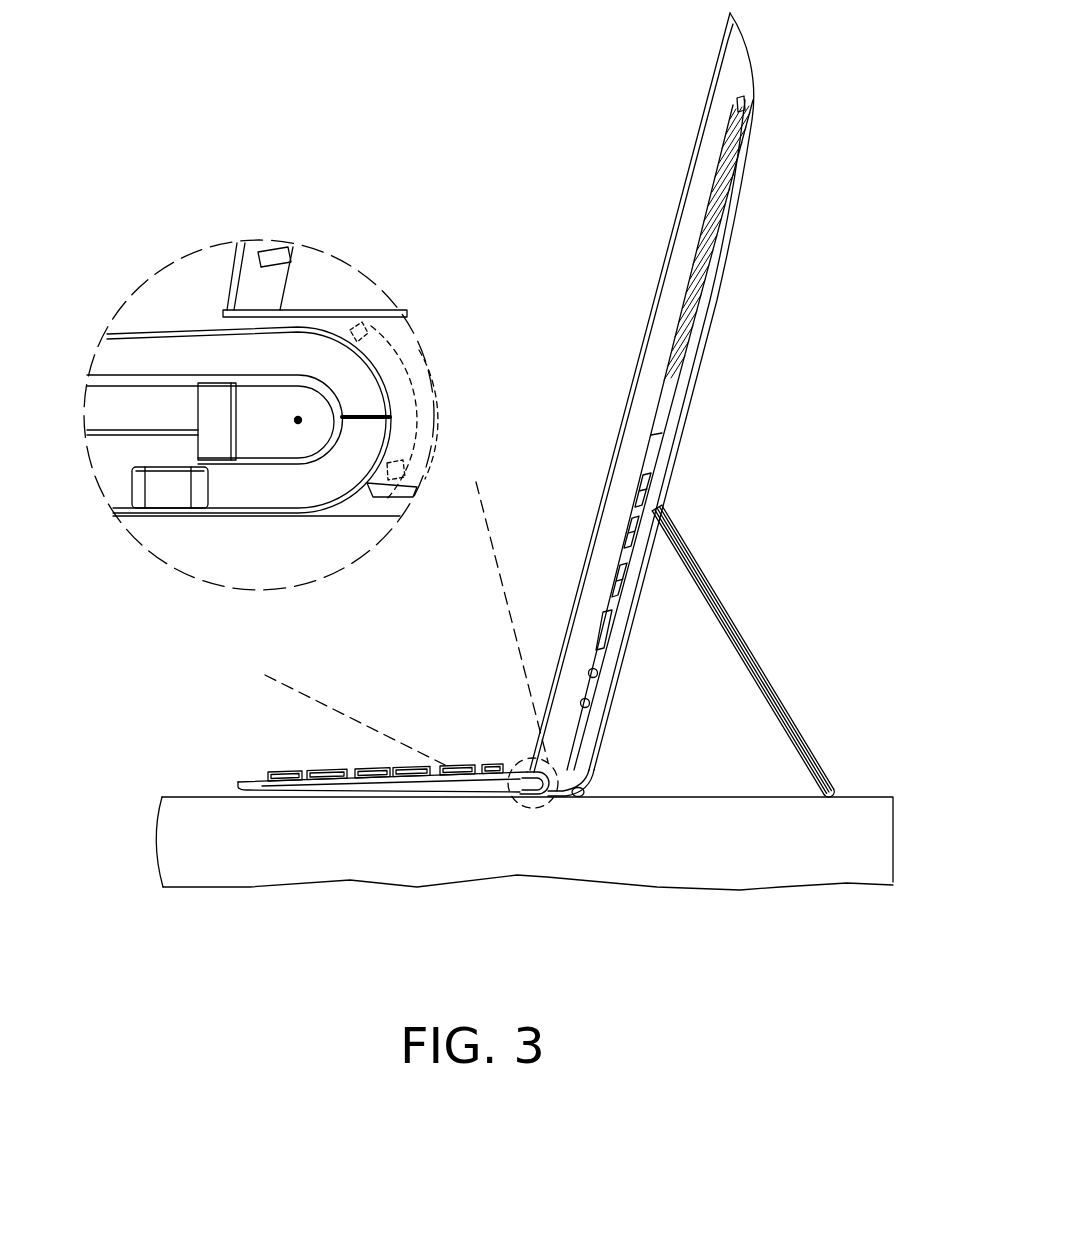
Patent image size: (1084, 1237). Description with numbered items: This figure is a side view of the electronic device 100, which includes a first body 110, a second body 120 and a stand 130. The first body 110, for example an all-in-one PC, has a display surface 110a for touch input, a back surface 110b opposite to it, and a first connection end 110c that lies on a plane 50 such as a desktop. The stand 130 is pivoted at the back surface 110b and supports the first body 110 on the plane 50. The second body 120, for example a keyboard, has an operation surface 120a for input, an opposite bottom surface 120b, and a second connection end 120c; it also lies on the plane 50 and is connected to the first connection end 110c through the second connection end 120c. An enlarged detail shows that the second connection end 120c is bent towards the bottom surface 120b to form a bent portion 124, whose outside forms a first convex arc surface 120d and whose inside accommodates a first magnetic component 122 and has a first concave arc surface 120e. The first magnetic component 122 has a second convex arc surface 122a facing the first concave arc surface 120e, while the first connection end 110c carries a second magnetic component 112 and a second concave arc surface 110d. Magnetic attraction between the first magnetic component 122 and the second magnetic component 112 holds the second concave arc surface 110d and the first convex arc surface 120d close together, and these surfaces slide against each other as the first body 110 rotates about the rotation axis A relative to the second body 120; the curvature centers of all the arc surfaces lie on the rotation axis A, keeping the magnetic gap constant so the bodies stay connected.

The electronic device 100 is at (897, 57).
The first body 110 is at (530, 405).
The display surface 110a is at (655, 277).
The back surface 110b is at (733, 230).
The first connection end 110c is at (421, 319).
The second concave arc surface 110d is at (352, 482).
The second magnetic component 112 is at (408, 340).
The second body 120 is at (321, 597).
The operation surface 120a is at (277, 772).
The bottom surface 120b is at (476, 798).
The second connection end 120c is at (190, 526).
The first convex arc surface 120d is at (388, 452).
The first concave arc surface 120e is at (310, 457).
The first magnetic component 122 is at (303, 512).
The second convex arc surface 122a is at (336, 393).
The bent portion 124 is at (312, 490).
The stand 130 is at (715, 597).
The plane 50 is at (768, 797).
The rotation axis A is at (298, 423).